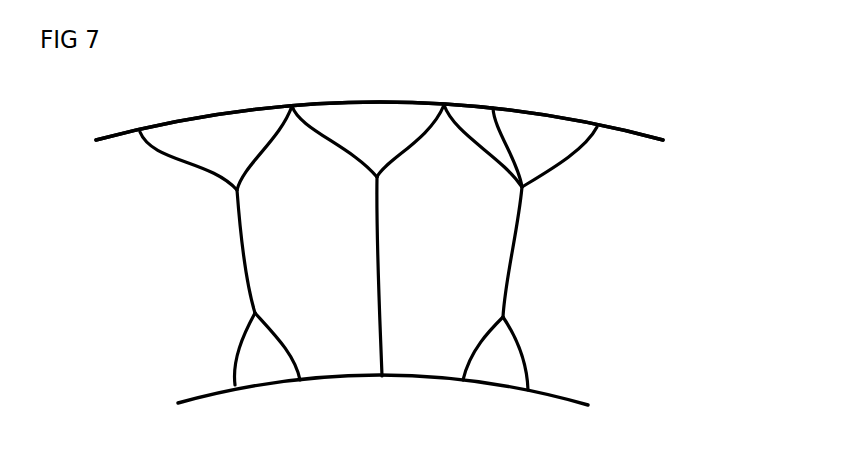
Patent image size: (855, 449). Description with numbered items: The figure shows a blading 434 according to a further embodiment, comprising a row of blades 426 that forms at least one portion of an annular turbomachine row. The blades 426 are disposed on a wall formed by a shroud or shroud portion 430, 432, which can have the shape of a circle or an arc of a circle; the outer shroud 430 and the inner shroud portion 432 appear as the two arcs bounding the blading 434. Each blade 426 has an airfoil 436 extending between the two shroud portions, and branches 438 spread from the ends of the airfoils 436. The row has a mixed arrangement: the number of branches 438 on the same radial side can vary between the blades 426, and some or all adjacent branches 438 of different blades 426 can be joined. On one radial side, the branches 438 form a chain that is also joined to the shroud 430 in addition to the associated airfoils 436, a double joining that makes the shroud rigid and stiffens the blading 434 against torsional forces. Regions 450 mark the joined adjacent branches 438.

The blade 426 is at (204, 91).
The shroud 430 is at (365, 101).
The shroud portion 432 is at (340, 375).
The blading 434 is at (155, 320).
The airfoil 436 is at (245, 253).
The branch 438 is at (180, 163).
The arch region 450 is at (313, 158).